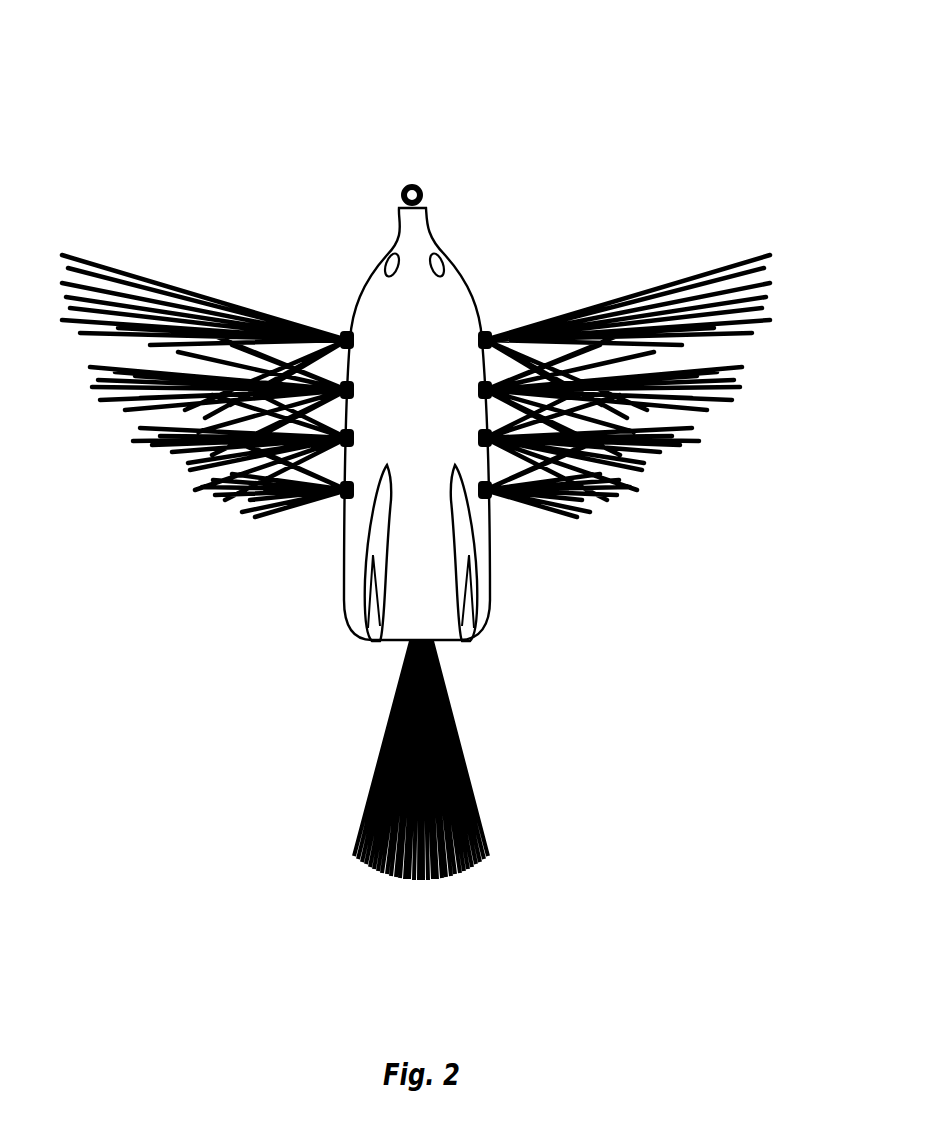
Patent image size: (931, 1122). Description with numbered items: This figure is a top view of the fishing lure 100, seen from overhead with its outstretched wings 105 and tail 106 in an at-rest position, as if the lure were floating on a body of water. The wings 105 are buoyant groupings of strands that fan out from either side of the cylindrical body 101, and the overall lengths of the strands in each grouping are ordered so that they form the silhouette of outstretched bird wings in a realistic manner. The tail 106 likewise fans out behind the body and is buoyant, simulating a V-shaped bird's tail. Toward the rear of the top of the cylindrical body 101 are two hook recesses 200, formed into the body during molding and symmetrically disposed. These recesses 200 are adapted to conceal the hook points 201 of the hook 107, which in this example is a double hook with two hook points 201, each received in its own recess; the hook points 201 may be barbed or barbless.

The fishing lure 100 is at (412, 154).
The cylindrical body 101 is at (467, 267).
The wings 105 is at (225, 290).
The tail 106 is at (318, 858).
The hook 107 is at (470, 644).
The hook recesses 200 is at (366, 522).
The hook points 201 is at (376, 580).